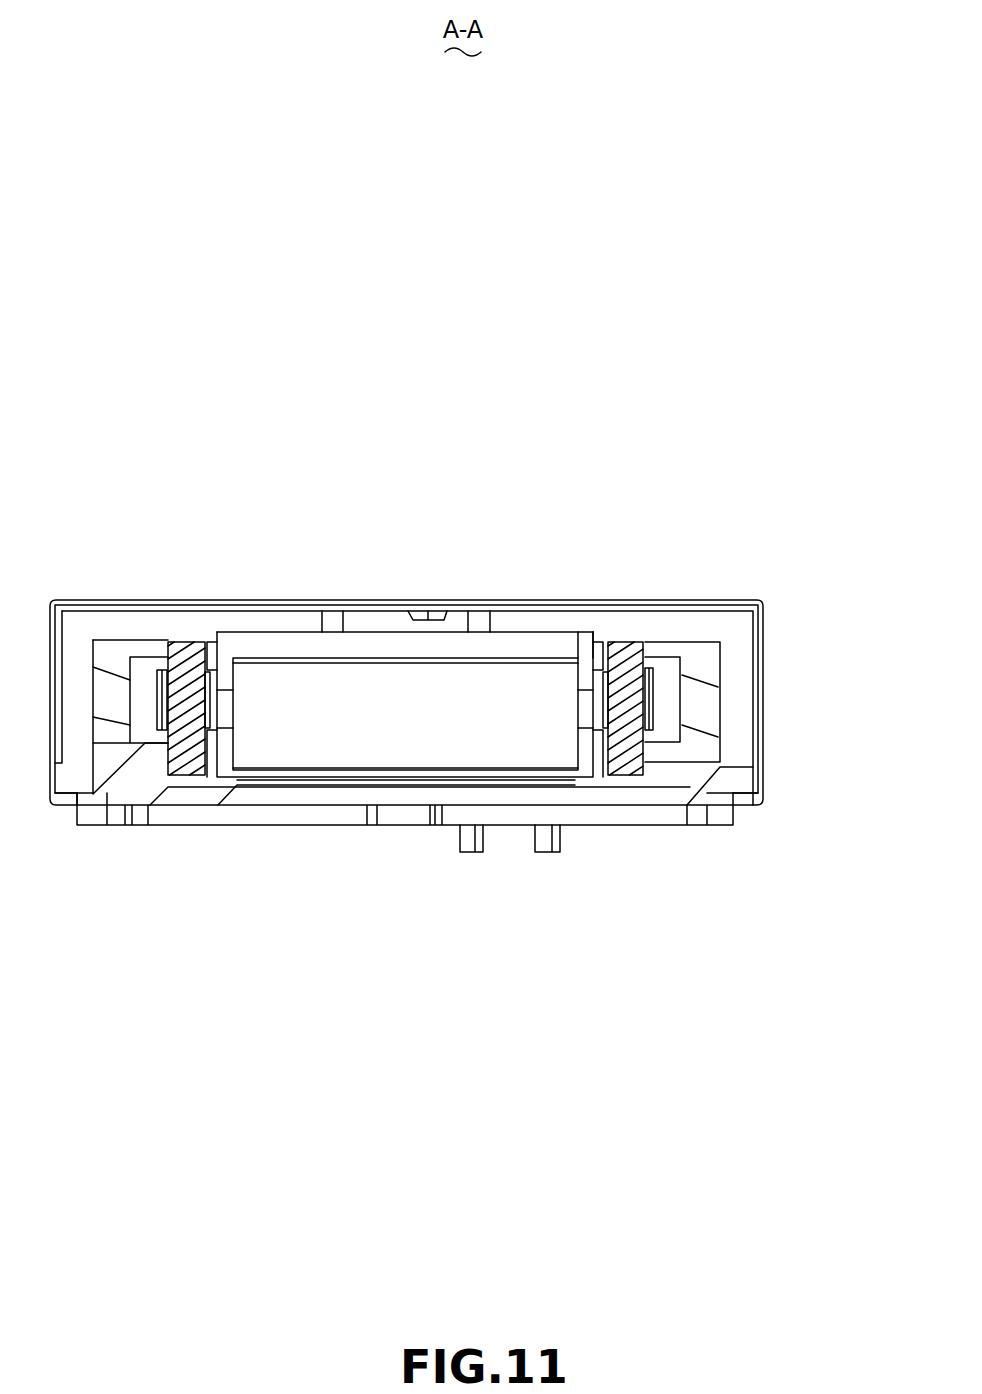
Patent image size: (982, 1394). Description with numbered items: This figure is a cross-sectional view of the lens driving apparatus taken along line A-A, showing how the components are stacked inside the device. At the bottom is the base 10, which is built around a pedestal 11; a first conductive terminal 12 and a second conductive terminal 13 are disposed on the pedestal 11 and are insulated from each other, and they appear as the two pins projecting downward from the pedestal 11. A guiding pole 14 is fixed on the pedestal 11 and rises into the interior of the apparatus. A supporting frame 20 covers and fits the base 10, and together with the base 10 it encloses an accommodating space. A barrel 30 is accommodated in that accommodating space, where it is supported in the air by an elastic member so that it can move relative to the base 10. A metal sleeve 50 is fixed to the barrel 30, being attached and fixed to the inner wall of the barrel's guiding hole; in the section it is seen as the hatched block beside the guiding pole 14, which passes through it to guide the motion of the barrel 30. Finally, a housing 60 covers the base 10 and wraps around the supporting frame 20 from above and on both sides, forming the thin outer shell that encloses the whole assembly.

The base 10 is at (405, 881).
The pedestal 11 is at (357, 813).
The first conductive terminal 12 is at (468, 840).
The second conductive terminal 13 is at (537, 867).
The guiding pole 14 is at (647, 728).
The supporting frame 20 is at (700, 703).
The barrel 30 is at (585, 670).
The metal sleeve 50 is at (647, 722).
The housing 60 is at (760, 622).